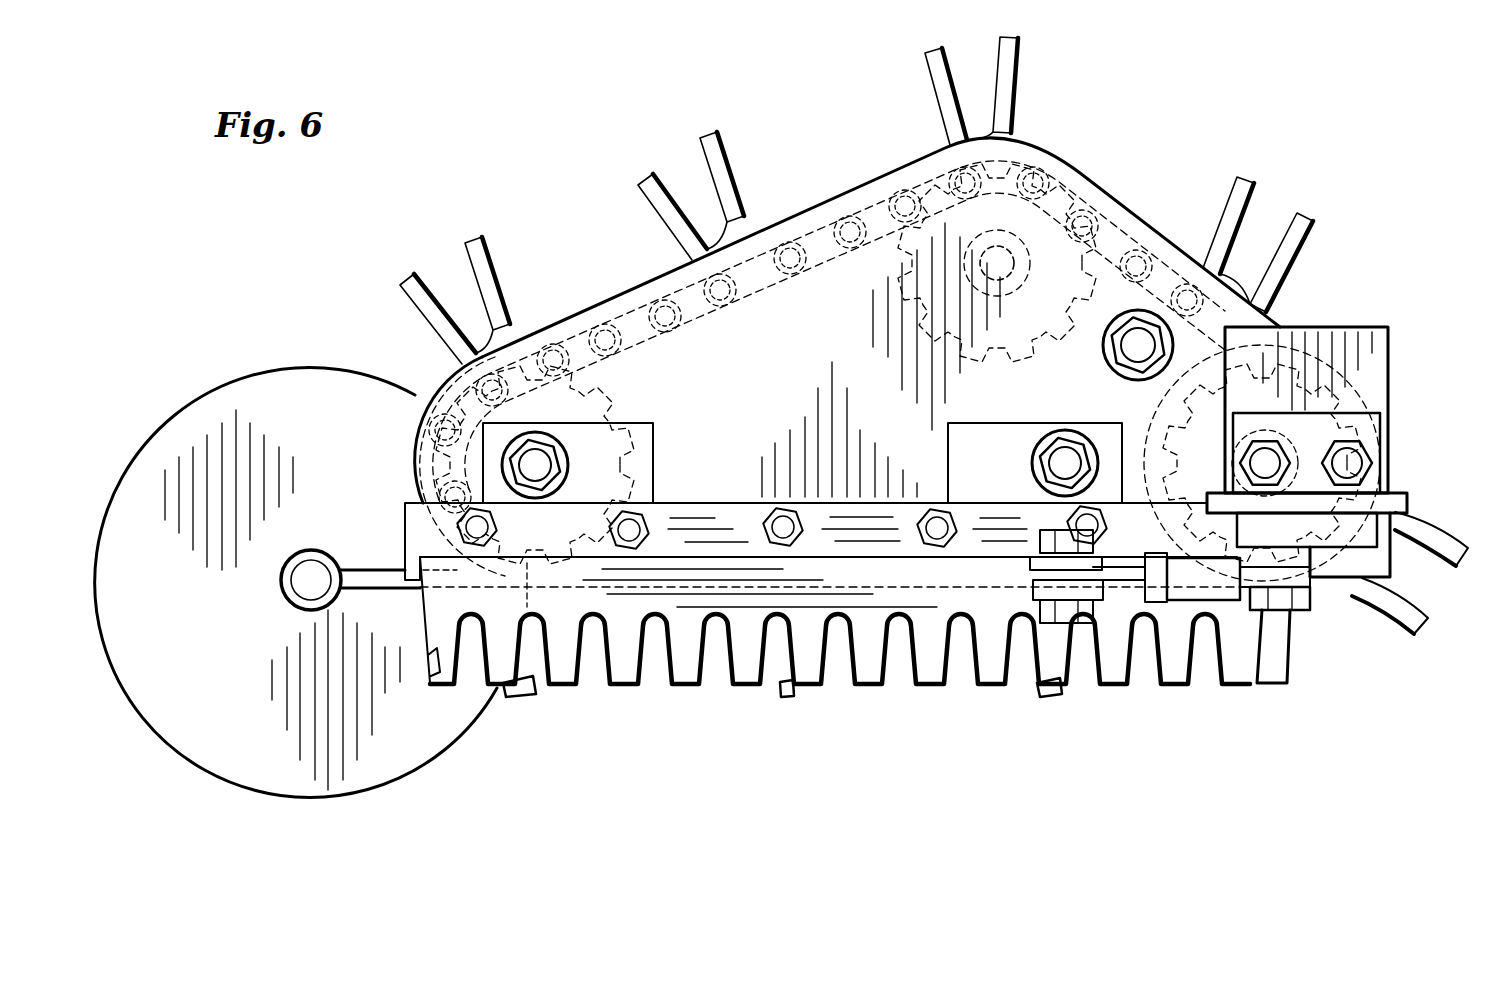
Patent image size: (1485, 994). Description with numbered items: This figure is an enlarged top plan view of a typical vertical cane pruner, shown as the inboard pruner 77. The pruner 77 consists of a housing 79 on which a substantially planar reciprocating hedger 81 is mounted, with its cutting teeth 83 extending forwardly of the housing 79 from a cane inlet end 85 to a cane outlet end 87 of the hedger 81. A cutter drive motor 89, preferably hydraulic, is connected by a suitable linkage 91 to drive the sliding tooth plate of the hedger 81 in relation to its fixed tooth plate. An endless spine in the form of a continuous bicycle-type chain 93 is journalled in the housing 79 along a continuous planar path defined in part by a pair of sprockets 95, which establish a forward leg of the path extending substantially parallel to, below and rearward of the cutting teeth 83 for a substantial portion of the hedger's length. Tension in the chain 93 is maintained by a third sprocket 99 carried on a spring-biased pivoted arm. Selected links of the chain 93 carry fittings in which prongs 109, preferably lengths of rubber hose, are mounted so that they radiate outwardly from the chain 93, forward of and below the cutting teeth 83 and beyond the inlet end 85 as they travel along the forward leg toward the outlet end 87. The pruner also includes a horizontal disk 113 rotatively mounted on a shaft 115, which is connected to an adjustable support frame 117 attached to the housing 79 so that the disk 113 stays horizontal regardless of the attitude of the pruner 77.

The inboard pruner 77 is at (1172, 176).
The housing 79 is at (850, 293).
The reciprocating hedger 81 is at (738, 527).
The cutting teeth 83 is at (617, 617).
The cane inlet end 85 is at (437, 650).
The cane outlet end 87 is at (1285, 648).
The cutter drive motor 89 is at (1367, 337).
The linkage 91 is at (1182, 592).
The chain 93 is at (637, 327).
The sprockets 95 is at (570, 413).
The third sprocket 99 is at (1047, 257).
The prongs 109 is at (700, 150).
The horizontal disk 113 is at (383, 785).
The shaft 115 is at (310, 575).
The support frame 117 is at (380, 577).